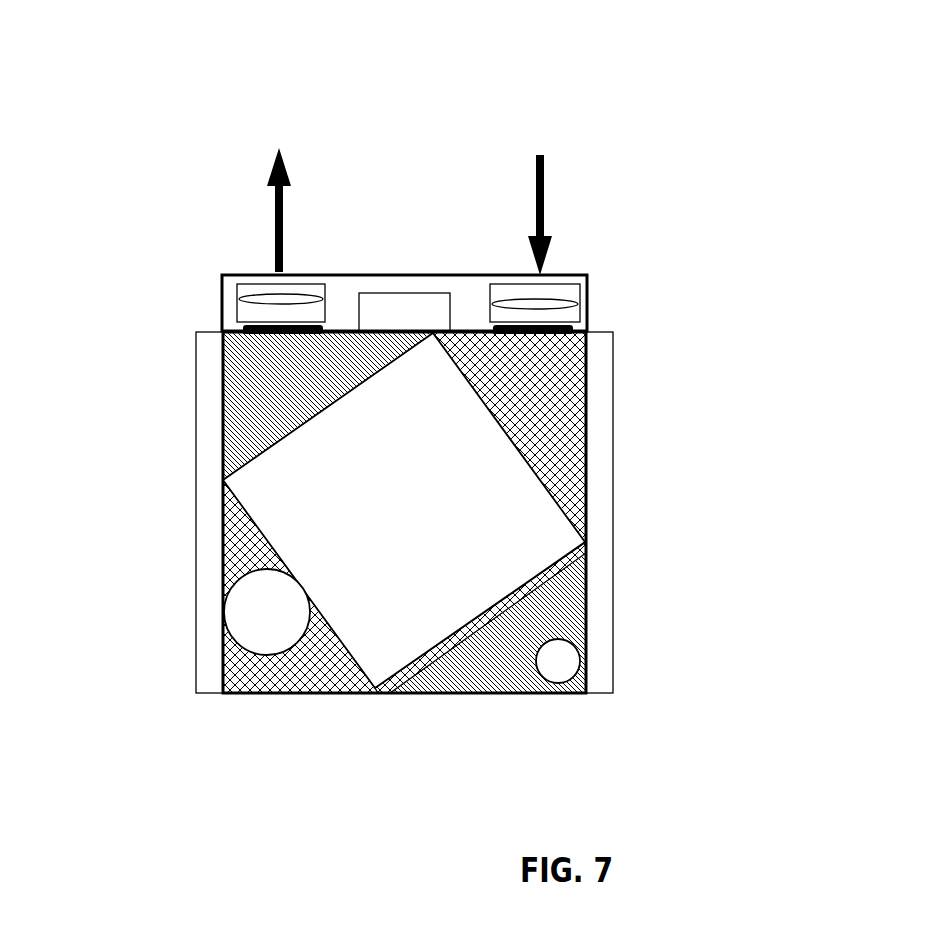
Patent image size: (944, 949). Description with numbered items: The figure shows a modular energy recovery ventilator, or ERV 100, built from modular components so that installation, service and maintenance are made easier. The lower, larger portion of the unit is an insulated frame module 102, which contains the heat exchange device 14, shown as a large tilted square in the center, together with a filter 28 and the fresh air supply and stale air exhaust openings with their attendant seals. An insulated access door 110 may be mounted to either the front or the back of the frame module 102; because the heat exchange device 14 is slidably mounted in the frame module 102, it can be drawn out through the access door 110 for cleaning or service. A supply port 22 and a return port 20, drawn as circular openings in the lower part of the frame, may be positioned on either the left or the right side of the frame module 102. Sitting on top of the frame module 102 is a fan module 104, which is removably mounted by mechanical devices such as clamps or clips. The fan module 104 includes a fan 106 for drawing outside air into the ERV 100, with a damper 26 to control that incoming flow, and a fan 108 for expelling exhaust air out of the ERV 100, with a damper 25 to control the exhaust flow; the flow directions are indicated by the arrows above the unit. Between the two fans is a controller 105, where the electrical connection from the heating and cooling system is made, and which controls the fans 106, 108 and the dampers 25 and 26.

The heat exchange device 14 is at (515, 545).
The return port 20 is at (560, 652).
The supply port 22 is at (242, 630).
The damper 25 is at (246, 329).
The damper 26 is at (572, 328).
The filter 28 is at (585, 563).
The ERV 100 is at (655, 72).
The frame module 102 is at (583, 530).
The fan module 104 is at (217, 272).
The controller 105 is at (397, 303).
The fan 106 is at (576, 289).
The fan 108 is at (245, 297).
The access door 110 is at (598, 405).